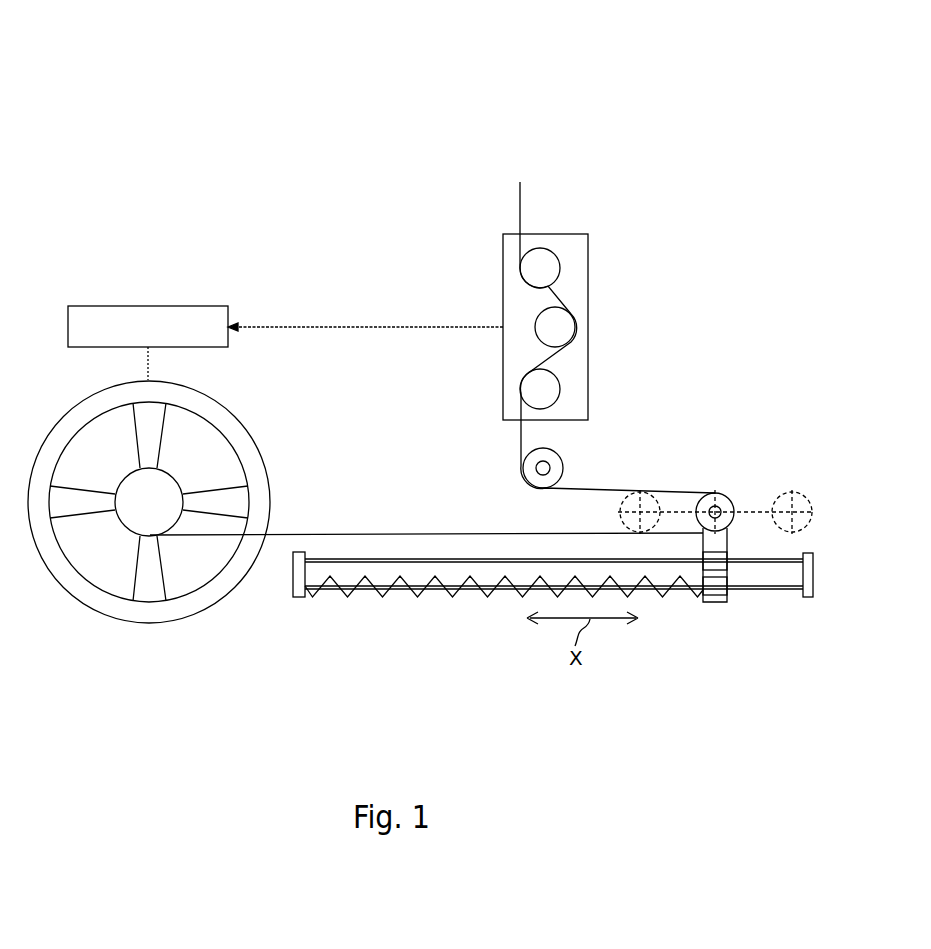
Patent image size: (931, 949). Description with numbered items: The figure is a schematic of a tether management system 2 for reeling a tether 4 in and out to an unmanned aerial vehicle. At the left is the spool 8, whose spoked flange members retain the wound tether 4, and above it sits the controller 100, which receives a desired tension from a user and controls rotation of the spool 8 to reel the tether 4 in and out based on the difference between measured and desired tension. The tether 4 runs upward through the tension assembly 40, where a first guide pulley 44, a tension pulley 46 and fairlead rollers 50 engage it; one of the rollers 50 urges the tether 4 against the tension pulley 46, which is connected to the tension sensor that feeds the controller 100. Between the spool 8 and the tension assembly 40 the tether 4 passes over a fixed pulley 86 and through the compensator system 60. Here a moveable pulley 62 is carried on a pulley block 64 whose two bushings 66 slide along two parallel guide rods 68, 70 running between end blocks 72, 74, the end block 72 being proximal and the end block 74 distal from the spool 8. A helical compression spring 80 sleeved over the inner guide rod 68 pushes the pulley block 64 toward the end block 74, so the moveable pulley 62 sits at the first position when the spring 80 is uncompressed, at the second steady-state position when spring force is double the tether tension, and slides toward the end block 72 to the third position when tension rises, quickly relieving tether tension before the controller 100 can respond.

The tether management system 2 is at (573, 120).
The tether 4 is at (519, 200).
The spool 8 is at (236, 418).
The tension assembly 40 is at (608, 230).
The first guide pulley 44 is at (561, 388).
The tension pulley 46 is at (538, 312).
The rollers 50 is at (561, 270).
The compensator system 60 is at (664, 463).
The moveable pulley 62 is at (700, 523).
The pulley block 64 is at (711, 600).
The bushings 66 is at (718, 557).
The guide rod 68 is at (786, 590).
The guide rod 70 is at (774, 561).
The end block 72 is at (290, 600).
The end block 74 is at (808, 580).
The compression spring 80 is at (520, 591).
The fixed pulley 86 is at (560, 452).
The controller 100 is at (175, 306).